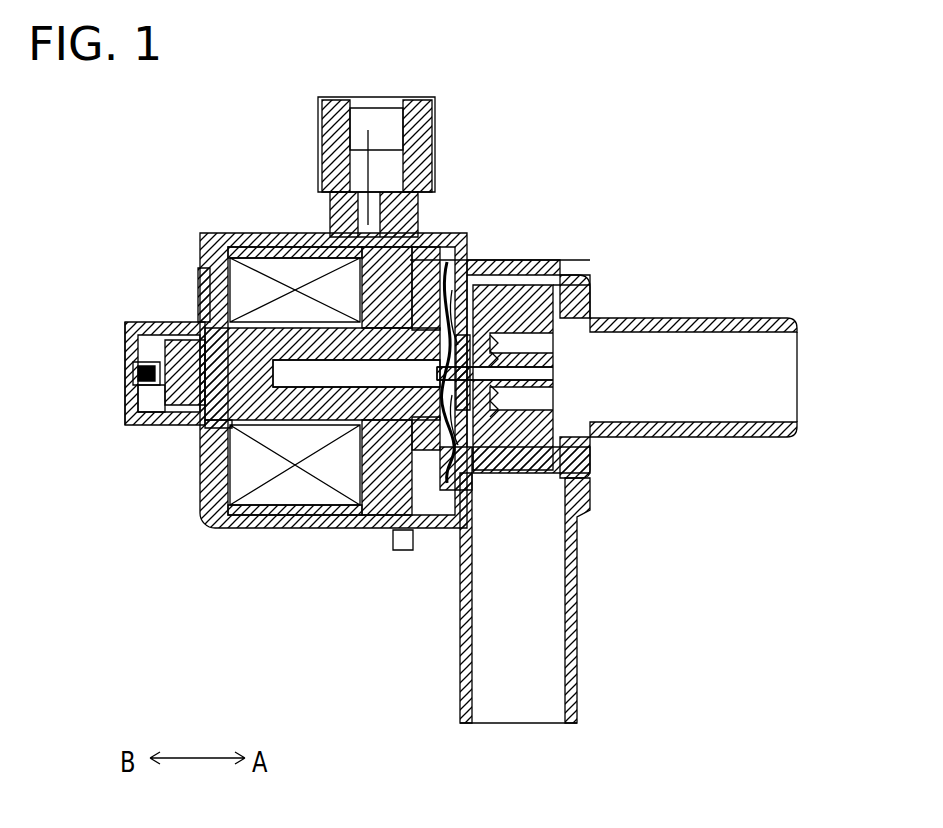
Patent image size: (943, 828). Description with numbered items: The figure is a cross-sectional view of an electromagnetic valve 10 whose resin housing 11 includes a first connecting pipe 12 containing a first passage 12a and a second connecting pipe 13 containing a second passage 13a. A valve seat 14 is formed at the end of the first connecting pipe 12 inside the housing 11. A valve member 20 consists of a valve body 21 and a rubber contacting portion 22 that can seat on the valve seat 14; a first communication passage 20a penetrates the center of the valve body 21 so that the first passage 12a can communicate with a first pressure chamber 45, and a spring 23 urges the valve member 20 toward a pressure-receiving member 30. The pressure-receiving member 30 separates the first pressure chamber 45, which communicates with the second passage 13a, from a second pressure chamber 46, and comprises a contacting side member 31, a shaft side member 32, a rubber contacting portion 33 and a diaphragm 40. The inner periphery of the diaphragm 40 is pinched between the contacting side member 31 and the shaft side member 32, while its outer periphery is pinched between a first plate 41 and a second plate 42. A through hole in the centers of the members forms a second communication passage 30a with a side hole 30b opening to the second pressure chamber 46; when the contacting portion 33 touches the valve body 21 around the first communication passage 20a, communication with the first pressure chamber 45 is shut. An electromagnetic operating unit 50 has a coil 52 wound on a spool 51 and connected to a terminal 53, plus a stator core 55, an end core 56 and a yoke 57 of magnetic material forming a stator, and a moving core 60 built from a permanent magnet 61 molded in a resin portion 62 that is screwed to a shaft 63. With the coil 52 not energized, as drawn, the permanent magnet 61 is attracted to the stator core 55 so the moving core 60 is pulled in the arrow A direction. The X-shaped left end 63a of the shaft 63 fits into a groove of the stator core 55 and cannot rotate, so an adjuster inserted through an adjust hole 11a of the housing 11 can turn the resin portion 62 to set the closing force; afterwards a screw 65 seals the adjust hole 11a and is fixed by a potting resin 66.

The electromagnetic valve 10 is at (786, 450).
The housing 11 is at (675, 435).
The adjust hole 11a is at (130, 365).
The first connecting pipe 12 is at (757, 318).
The first passage 12a is at (717, 390).
The second connecting pipe 13 is at (578, 690).
The second passage 13a is at (490, 677).
The valve seat 14 is at (610, 295).
The valve member 20 is at (590, 453).
The first communication passage 20a is at (545, 380).
The valve body 21 is at (520, 300).
The contacting portion 22 is at (575, 268).
The spring 23 is at (580, 505).
The pressure-receiving member 30 is at (455, 405).
The second communication passage 30a is at (483, 330).
The side hole 30b is at (430, 355).
The contacting side member 31 is at (463, 355).
The shaft side member 32 is at (370, 395).
The contacting portion 33 is at (500, 330).
The diaphragm 40 is at (445, 420).
The first plate 41 is at (455, 440).
The second plate 42 is at (400, 472).
The first pressure chamber 45 is at (470, 430).
The second pressure chamber 46 is at (417, 317).
The electromagnetic operating unit 50 is at (218, 542).
The spool 51 is at (197, 492).
The coil 52 is at (290, 255).
The terminal 53 is at (365, 135).
The stator core 55 is at (268, 248).
The end core 56 is at (385, 455).
The yoke 57 is at (207, 522).
The moving core 60 is at (165, 350).
The permanent magnet 61 is at (195, 345).
The resin portion 62 is at (145, 420).
The shaft 63 is at (288, 378).
The left end 63a is at (200, 458).
The screw 65 is at (138, 375).
The potting resin 66 is at (140, 397).